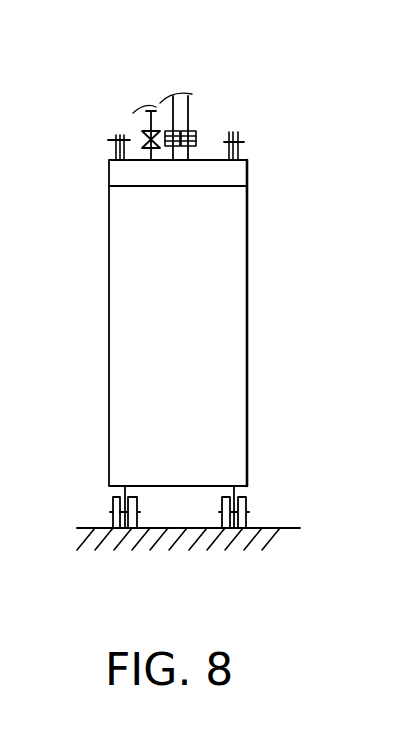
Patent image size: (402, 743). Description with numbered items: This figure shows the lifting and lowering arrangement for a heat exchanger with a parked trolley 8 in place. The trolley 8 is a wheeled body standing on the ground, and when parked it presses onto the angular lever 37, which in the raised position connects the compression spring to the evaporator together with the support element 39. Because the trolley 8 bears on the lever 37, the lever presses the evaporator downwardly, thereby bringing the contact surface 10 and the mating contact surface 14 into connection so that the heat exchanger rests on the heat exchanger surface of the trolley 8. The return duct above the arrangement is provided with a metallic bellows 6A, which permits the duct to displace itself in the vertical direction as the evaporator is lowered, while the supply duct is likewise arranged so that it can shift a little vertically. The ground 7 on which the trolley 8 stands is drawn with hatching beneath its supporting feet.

The trolley 8 is at (247, 352).
The contact surface 10 is at (207, 186).
The contact surface 14 is at (153, 188).
The angular lever 37 is at (118, 133).
The support element 39 is at (113, 138).
The metallic bellows 6A is at (197, 132).
The ground 7 is at (187, 528).